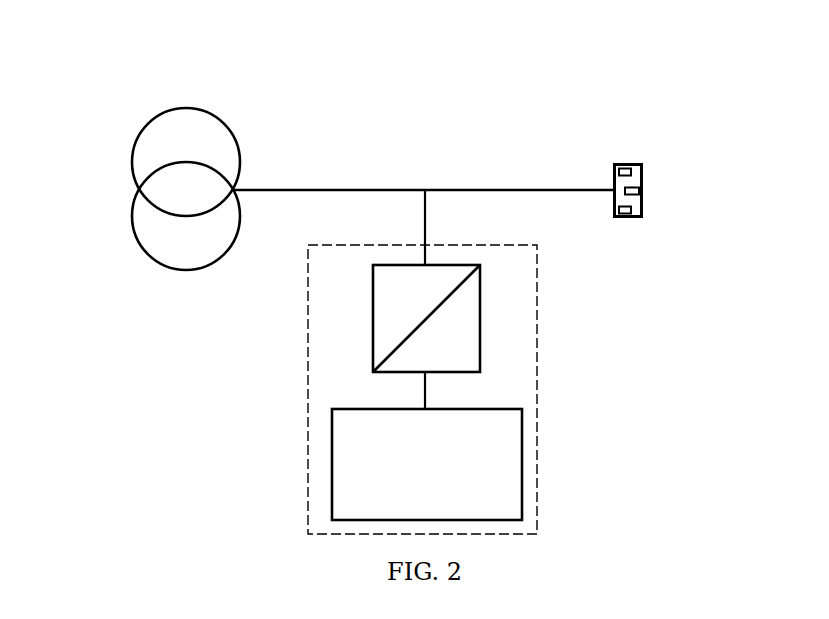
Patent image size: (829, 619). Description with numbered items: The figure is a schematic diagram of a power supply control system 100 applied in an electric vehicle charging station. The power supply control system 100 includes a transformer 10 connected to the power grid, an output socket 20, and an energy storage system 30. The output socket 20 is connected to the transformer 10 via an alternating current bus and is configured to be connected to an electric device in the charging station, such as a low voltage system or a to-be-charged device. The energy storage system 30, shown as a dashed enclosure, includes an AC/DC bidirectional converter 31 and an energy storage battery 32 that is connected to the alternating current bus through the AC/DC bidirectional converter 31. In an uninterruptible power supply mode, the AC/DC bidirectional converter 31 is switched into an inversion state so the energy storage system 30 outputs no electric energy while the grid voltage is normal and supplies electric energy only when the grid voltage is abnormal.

The power supply control system 100 is at (133, 53).
The transformer 10 is at (237, 146).
The output socket 20 is at (643, 180).
The energy storage system 30 is at (307, 375).
The AC/DC bidirectional converter 31 is at (483, 323).
The energy storage battery 32 is at (520, 462).